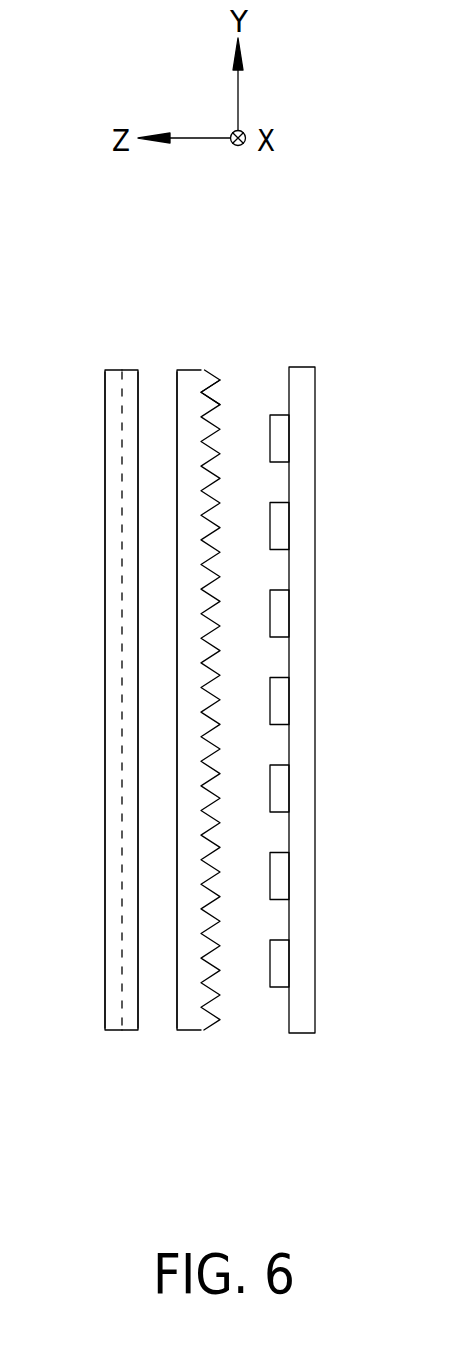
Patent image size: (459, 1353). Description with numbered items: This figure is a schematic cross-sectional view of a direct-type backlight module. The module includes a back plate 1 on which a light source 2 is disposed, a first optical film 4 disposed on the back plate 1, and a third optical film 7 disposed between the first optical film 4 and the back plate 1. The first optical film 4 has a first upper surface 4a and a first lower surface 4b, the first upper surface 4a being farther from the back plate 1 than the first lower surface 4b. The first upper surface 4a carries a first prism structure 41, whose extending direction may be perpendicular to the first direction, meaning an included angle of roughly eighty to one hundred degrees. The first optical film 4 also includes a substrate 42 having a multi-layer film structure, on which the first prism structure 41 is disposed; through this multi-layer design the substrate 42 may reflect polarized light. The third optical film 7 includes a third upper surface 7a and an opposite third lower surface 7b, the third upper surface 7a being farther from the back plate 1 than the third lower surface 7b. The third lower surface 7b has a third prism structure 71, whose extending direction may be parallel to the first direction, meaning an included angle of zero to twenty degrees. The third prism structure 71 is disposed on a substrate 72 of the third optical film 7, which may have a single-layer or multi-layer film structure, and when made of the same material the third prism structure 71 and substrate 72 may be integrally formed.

The back plate 1 is at (302, 375).
The light source 2 is at (280, 417).
The first optical film 4 is at (117, 675).
The first prism structure 41 is at (110, 370).
The substrate 42 is at (128, 370).
The first upper surface 4a is at (105, 1030).
The first lower surface 4b is at (138, 1030).
The third optical film 7 is at (195, 675).
The third prism structure 71 is at (218, 385).
The substrate 72 is at (181, 370).
The third upper surface 7a is at (177, 1030).
The third lower surface 7b is at (205, 1030).